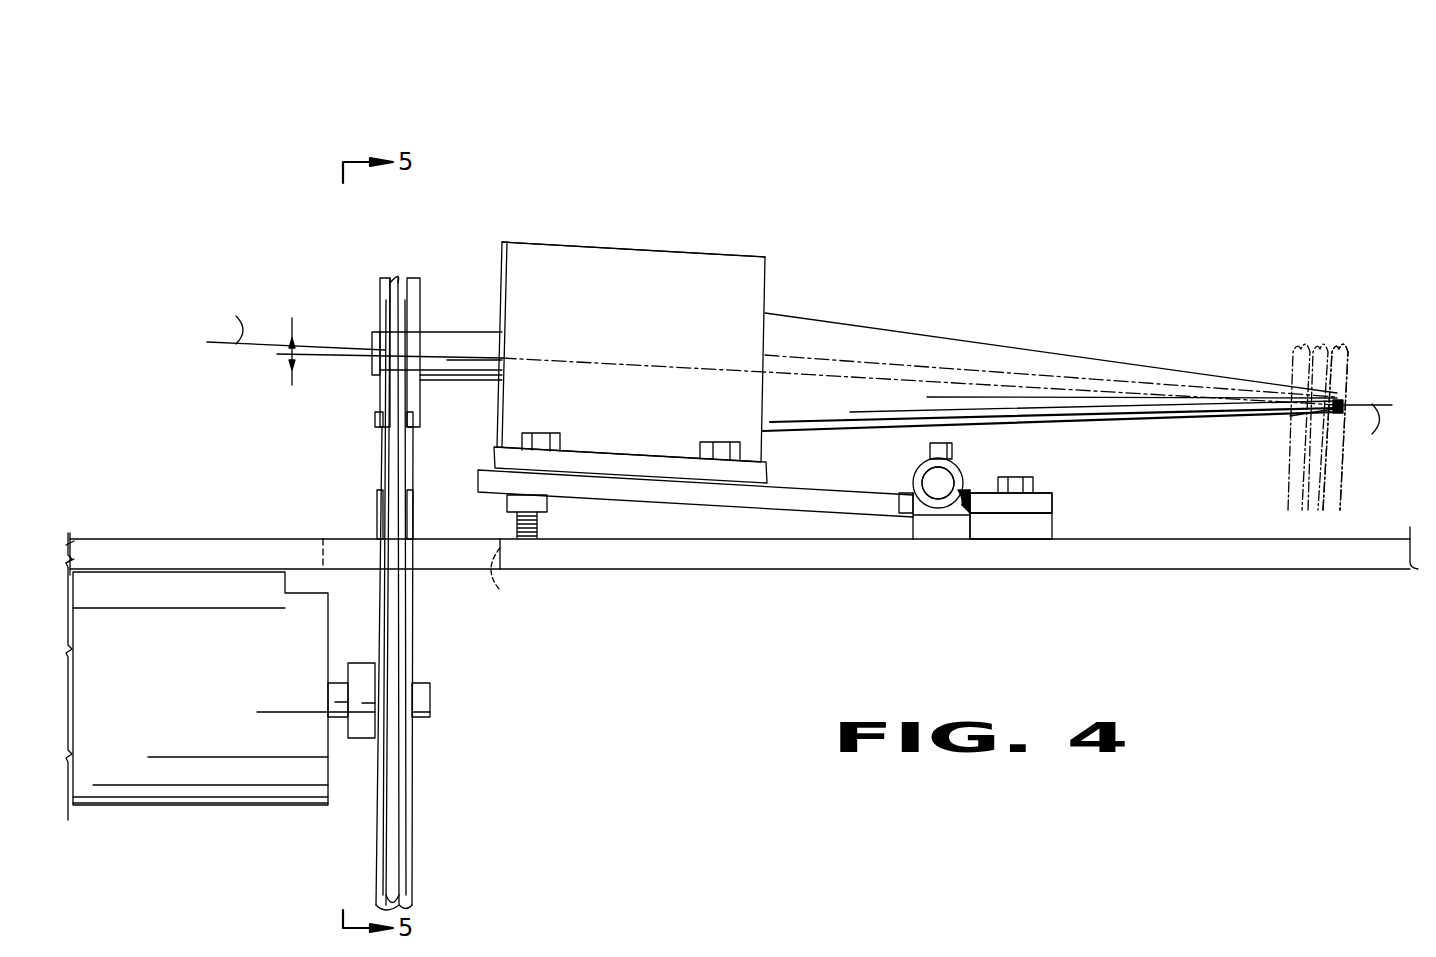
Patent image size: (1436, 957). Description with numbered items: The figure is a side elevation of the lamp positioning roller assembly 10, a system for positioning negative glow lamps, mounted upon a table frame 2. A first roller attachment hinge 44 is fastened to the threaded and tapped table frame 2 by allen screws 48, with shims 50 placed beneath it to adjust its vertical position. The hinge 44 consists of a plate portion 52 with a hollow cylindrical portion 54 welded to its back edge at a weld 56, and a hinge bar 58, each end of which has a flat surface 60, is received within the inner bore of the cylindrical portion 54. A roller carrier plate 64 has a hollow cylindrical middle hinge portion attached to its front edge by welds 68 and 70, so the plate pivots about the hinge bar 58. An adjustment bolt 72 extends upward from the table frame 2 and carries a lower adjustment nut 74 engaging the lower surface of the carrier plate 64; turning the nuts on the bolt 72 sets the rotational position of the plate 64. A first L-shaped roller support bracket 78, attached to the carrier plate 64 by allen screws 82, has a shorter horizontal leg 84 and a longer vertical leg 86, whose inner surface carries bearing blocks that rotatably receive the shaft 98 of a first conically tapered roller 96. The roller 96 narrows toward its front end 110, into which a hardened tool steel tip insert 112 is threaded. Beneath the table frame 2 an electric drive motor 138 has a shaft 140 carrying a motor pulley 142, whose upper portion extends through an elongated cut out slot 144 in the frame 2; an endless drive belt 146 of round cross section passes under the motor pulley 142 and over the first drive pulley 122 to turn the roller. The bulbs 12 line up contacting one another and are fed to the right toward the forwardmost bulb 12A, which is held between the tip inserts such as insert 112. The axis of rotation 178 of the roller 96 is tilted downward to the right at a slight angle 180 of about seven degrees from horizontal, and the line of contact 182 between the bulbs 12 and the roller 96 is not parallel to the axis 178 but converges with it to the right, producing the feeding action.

The table frame 2 is at (1313, 539).
The lamp positioning roller assembly 10 is at (882, 292).
The bulbs 12 is at (1312, 347).
The forwardmost bulb 12A is at (1345, 352).
The first roller attachment hinge 44 is at (1043, 503).
The plate portion 52 is at (1011, 503).
The allen screws 48 is at (1027, 477).
The shims 50 is at (1040, 530).
The hollow cylindrical portion 54 is at (917, 463).
The weld 56 is at (968, 492).
The hinge bar 58 is at (942, 497).
The flat surface 60 is at (950, 460).
The roller carrier plate 64 is at (802, 502).
The weld 68 is at (902, 487).
The weld 70 is at (913, 514).
The adjustment bolt 72 is at (517, 527).
The lower adjustment nut 74 is at (548, 503).
The first L-shaped roller support bracket 78 is at (645, 345).
The allen screws 82 is at (548, 437).
The shorter horizontal leg 84 is at (595, 455).
The longer vertical leg 86 is at (675, 258).
The first conically tapered roller 96 is at (830, 402).
The shaft 98 is at (455, 338).
The front end 110 is at (1335, 412).
The tip insert 112 is at (1340, 393).
The first drive pulley 122 is at (382, 288).
The electric drive motor 138 is at (179, 673).
The shaft 140 is at (337, 688).
The motor pulley 142 is at (377, 500).
The elongated cut out slot 144 is at (500, 590).
The endless drive belt 146 is at (390, 453).
The axis of rotation 178 is at (810, 378).
The angle 180 is at (280, 350).
The line of contact 182 is at (873, 365).